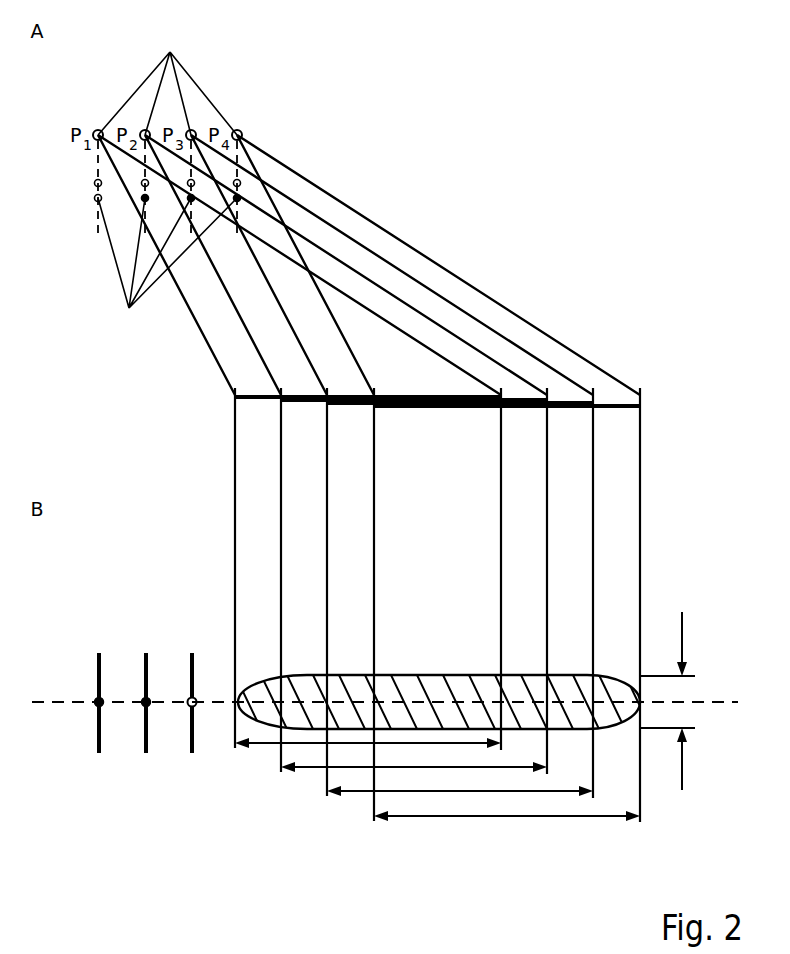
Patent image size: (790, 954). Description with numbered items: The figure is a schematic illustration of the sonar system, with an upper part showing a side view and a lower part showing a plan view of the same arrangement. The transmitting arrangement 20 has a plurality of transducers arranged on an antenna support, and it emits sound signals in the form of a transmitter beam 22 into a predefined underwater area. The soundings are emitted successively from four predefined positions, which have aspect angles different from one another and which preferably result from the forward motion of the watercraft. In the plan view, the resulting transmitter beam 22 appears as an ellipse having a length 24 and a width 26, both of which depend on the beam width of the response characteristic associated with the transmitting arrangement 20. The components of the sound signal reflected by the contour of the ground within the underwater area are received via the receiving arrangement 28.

The transmitting arrangement 20 is at (170, 838).
The transmitter beam 22 is at (443, 410).
The length 24 is at (435, 817).
The width 26 is at (684, 638).
The receiving arrangement 28 is at (55, 753).